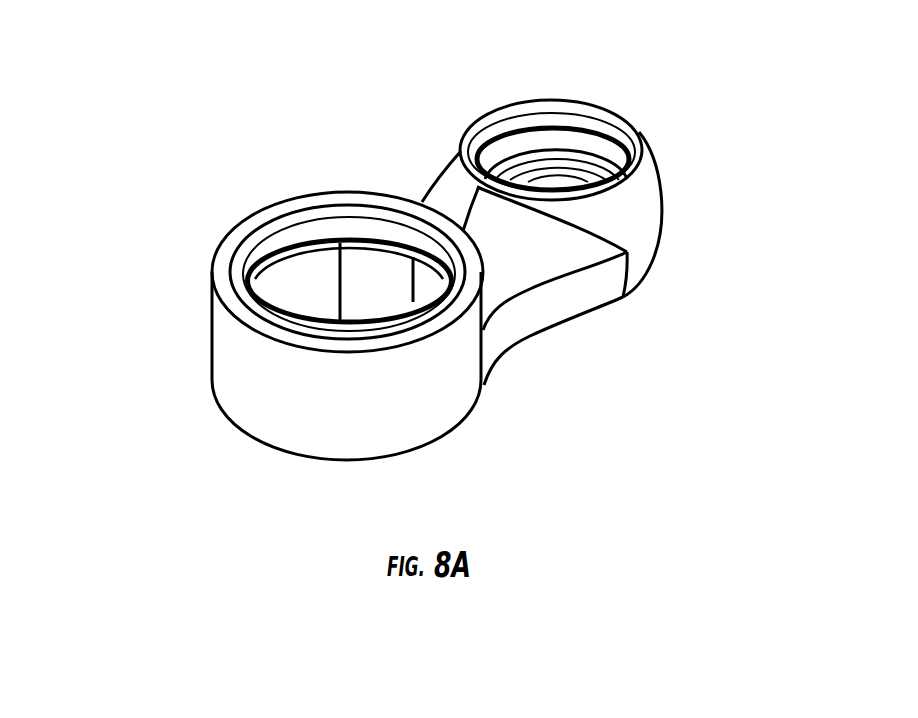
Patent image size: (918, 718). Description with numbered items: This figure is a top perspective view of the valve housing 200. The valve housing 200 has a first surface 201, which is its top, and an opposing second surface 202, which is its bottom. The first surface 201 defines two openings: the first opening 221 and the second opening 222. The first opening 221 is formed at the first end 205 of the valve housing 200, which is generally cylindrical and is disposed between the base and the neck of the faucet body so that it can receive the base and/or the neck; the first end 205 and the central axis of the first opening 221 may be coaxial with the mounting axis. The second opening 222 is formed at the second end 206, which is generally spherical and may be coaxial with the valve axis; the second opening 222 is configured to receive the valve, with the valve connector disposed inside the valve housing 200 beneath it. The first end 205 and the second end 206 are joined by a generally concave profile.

The valve housing 200 is at (170, 161).
The first surface 201 is at (458, 200).
The second surface 202 is at (533, 369).
The first end 205 is at (183, 369).
The second end 206 is at (680, 128).
The first opening 221 is at (363, 282).
The second opening 222 is at (553, 142).